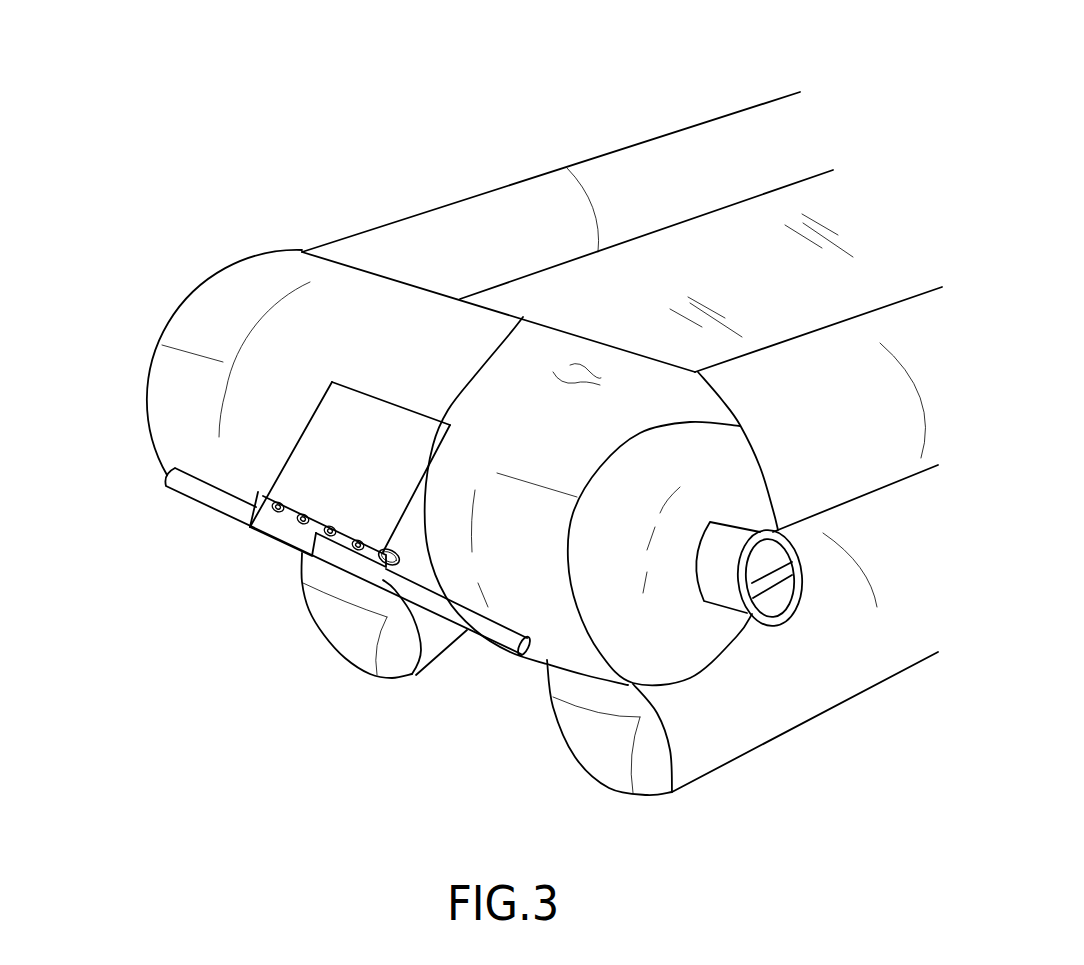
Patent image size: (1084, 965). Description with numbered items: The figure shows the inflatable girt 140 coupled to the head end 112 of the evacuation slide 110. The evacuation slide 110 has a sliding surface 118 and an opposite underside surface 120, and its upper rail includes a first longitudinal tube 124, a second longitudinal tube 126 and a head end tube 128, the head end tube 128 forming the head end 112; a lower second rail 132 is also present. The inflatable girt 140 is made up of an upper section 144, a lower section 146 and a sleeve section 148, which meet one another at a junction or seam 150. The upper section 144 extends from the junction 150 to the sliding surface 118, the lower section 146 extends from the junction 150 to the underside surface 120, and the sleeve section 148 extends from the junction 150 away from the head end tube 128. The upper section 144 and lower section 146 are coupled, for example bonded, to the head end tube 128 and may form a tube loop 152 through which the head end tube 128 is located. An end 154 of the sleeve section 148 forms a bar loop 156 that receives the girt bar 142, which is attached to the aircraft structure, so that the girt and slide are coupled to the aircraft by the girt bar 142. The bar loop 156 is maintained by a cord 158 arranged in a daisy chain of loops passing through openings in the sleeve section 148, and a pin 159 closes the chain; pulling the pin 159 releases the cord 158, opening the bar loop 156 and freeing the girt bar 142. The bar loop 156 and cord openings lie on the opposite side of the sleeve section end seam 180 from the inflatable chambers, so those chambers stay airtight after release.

The evacuation slide 110 is at (269, 135).
The head end 112 is at (174, 413).
The sliding surface 118 is at (790, 283).
The underside surface 120 is at (543, 660).
The first longitudinal tube 124 is at (898, 320).
The second longitudinal tube 126 is at (657, 150).
The head end tube 128 is at (215, 297).
The second rail 132 is at (908, 628).
The inflatable girt 140 is at (299, 331).
The girt bar 142 is at (185, 482).
The upper section 144 is at (397, 322).
The lower section 146 is at (417, 493).
The sleeve section 148 is at (310, 484).
The junction 150 is at (403, 405).
The tube loop 152 is at (511, 353).
The end of sleeve section 154 is at (273, 540).
The bar loop 156 is at (370, 590).
The cord 158 is at (302, 552).
The pin 159 is at (403, 550).
The sleeve section seam 180 is at (323, 512).